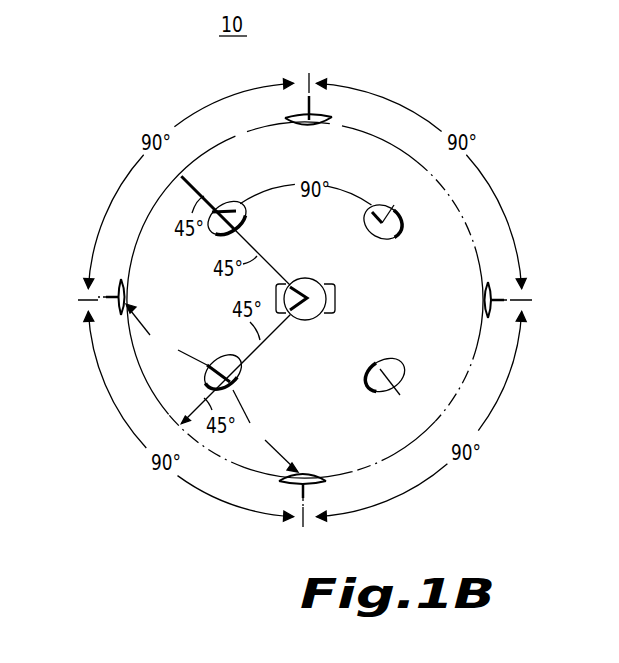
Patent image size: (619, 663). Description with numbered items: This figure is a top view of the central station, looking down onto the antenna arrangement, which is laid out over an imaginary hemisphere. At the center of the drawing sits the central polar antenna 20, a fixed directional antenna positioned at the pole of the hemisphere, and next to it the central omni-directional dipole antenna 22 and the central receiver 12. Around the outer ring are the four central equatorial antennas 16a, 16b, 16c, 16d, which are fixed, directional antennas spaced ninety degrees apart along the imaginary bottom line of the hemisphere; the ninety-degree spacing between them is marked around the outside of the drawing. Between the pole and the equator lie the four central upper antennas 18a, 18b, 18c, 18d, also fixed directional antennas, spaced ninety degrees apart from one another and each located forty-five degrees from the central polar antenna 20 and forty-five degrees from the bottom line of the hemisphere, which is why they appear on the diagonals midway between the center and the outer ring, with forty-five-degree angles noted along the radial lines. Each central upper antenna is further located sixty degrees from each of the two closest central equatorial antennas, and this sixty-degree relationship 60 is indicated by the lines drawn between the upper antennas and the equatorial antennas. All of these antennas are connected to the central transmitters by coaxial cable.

The central receiver 12 is at (322, 313).
The central equatorial antenna 16a is at (290, 484).
The central equatorial antenna 16b is at (495, 285).
The central equatorial antenna 16c is at (330, 118).
The central equatorial antenna 16d is at (121, 303).
The central upper antenna 18a is at (405, 376).
The central upper antenna 18b is at (403, 226).
The central upper antenna 18c is at (229, 202).
The central upper antenna 18d is at (244, 373).
The central polar antenna 20 is at (313, 281).
The central omni-directional dipole antenna 22 is at (334, 306).
The field direction arrow 60 is at (212, 388).